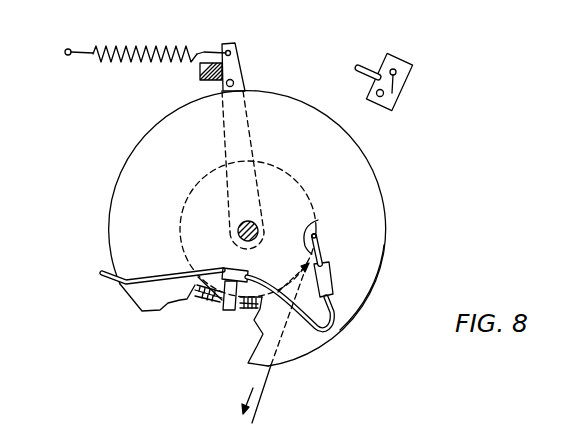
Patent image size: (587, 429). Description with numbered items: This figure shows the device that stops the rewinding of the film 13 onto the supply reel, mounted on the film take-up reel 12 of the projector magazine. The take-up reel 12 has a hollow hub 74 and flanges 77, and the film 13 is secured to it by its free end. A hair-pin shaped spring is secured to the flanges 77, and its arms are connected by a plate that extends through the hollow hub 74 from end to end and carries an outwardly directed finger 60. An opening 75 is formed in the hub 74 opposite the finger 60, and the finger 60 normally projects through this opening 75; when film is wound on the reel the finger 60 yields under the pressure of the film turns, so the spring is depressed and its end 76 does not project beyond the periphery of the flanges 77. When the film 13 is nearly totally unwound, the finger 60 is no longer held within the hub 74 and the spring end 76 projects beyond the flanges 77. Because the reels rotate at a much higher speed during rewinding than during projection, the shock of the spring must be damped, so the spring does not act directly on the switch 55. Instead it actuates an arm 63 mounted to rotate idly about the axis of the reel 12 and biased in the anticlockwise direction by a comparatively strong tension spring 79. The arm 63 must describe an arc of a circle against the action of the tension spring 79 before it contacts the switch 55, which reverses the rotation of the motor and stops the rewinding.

The film take-up reel 12 is at (385, 213).
The film 13 is at (268, 388).
The switch 55 is at (405, 87).
The finger 60 is at (228, 310).
The arm 63 is at (243, 70).
The hub 74 is at (313, 200).
The opening 75 is at (218, 305).
The spring end 76 is at (113, 282).
The reel flange 77 is at (378, 283).
The tension spring 79 is at (143, 63).